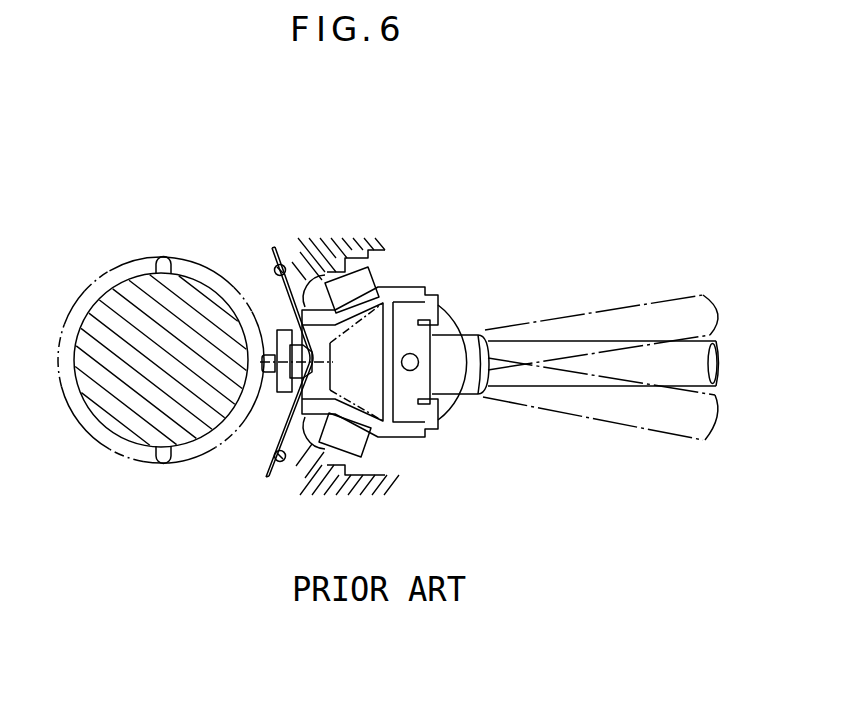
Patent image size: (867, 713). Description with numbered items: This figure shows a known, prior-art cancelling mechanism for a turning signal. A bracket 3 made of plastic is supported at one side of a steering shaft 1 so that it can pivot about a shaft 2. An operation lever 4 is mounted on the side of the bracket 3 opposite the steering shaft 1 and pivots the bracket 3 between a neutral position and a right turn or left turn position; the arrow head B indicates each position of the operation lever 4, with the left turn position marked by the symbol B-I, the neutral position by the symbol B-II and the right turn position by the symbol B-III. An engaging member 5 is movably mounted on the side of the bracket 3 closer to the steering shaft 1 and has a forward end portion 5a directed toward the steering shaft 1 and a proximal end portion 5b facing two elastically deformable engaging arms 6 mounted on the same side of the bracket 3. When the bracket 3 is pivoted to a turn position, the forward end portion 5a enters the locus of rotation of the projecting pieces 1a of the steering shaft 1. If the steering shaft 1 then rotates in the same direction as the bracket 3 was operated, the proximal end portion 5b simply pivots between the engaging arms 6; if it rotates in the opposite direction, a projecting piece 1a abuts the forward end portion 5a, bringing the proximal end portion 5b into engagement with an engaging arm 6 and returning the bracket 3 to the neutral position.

The steering shaft 1 is at (106, 422).
The projecting pieces 1a is at (162, 257).
The shaft 2 is at (412, 370).
The bracket 3 is at (455, 304).
The operation lever 4 is at (520, 378).
The engaging member 5 is at (284, 357).
The forward end portion 5a is at (243, 302).
The proximal end portion 5b is at (337, 379).
The engaging arms 6 is at (315, 314).
The arrow head B is at (701, 263).
The left turn position B-I is at (785, 325).
The neutral position B-II is at (793, 375).
The right turn position B-III is at (797, 427).